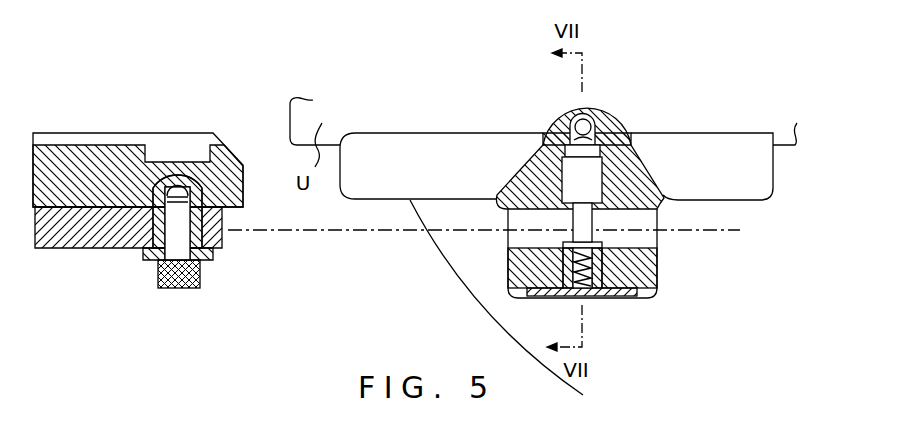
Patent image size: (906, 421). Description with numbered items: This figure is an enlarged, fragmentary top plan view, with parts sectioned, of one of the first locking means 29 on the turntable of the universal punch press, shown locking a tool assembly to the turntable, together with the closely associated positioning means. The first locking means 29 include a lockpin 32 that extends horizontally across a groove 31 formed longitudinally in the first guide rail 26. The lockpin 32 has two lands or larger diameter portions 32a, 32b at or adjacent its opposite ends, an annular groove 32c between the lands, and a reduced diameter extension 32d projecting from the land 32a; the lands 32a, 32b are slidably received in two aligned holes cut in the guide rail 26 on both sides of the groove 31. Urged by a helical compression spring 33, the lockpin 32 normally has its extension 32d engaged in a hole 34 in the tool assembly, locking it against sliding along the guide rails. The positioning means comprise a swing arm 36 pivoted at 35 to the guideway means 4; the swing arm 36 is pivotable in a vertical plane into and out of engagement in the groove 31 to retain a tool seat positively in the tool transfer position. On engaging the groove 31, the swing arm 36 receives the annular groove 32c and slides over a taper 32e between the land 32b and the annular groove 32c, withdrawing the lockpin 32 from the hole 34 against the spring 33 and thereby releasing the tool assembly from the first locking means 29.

The guideway means 4 is at (112, 160).
The swing arm 36 is at (93, 232).
The pivot 35 is at (186, 235).
The first guide rail 26 is at (748, 153).
The first locking means 29 is at (618, 101).
The groove 31 is at (527, 220).
The lockpin 32 is at (519, 167).
The land 32a is at (590, 178).
The land 32b is at (598, 270).
The annular groove 32c is at (587, 220).
The reduced diameter extension 32d is at (600, 122).
The taper 32e is at (565, 243).
The helical compression spring 33 is at (597, 297).
The hole 34 is at (573, 128).